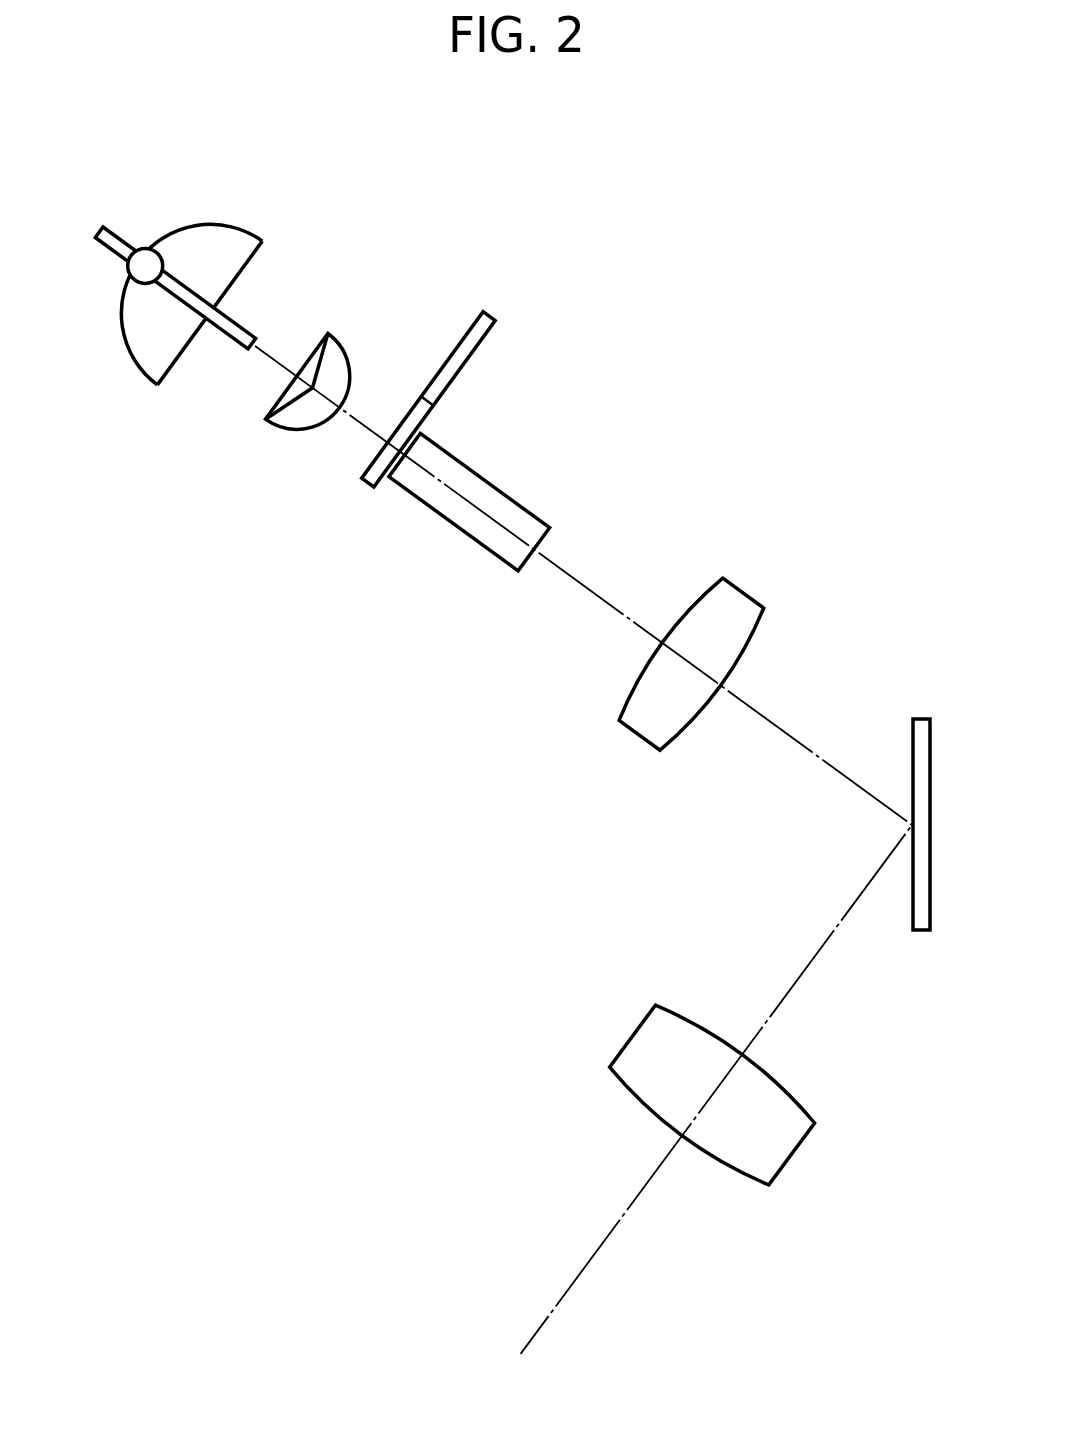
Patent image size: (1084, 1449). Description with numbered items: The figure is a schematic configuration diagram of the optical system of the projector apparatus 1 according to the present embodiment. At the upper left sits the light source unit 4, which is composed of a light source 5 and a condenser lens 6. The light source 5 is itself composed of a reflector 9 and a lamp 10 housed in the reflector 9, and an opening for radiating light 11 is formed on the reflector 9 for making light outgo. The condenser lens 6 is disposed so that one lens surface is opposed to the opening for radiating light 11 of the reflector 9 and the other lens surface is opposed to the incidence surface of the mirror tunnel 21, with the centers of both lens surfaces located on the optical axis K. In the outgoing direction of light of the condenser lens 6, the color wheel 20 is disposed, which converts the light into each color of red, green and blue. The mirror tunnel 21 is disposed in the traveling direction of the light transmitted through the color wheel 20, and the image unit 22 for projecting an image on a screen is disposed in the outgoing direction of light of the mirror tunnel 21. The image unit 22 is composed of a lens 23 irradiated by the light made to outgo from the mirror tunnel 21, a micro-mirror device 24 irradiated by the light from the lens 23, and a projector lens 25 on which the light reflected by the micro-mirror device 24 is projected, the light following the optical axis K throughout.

The projector 1 is at (796, 212).
The light source unit 4 is at (555, 236).
The light source 5 is at (248, 205).
The condenser lens 6 is at (332, 335).
The reflector 9 is at (195, 225).
The lamp 10 is at (112, 235).
The opening for radiating light 11 is at (266, 244).
The color wheel 20 is at (496, 318).
The mirror tunnel 21 is at (514, 502).
The image unit 22 is at (906, 588).
The lens 23 is at (736, 585).
The micro-mirror device 24 is at (920, 719).
The projector lens 25 is at (798, 1147).
The optical axis K is at (585, 584).